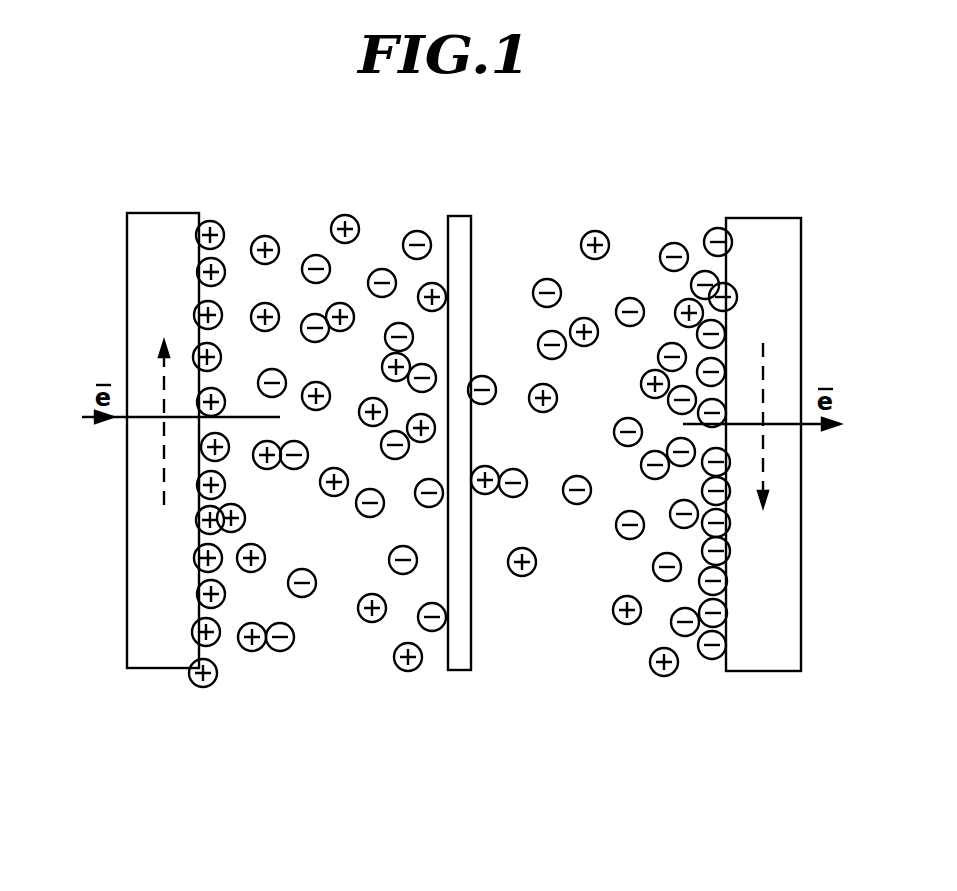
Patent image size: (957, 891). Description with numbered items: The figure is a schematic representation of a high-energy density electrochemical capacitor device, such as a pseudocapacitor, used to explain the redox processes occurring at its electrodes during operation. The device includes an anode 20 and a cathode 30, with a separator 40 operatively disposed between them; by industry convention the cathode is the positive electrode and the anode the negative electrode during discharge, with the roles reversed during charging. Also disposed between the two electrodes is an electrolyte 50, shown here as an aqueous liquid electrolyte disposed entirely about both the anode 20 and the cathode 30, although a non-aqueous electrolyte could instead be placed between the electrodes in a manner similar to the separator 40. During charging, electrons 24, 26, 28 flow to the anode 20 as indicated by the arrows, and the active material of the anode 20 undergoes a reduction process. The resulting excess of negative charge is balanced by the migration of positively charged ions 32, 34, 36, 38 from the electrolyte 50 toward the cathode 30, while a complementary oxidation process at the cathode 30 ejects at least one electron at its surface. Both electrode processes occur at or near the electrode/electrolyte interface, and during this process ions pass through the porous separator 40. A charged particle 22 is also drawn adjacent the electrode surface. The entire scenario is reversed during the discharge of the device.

The anode 20 is at (780, 645).
The anion adsorbed on right electrode 22 is at (713, 230).
The electron 24 is at (655, 572).
The electron 26 is at (672, 628).
The electron 28 is at (710, 660).
The cathode 30 is at (142, 642).
The positively charged ion 32 is at (216, 228).
The positively charged ion 34 is at (197, 595).
The positively charged ion 36 is at (193, 630).
The positively charged ion 38 is at (197, 692).
The separator 40 is at (463, 653).
The electrolyte 50 is at (506, 620).